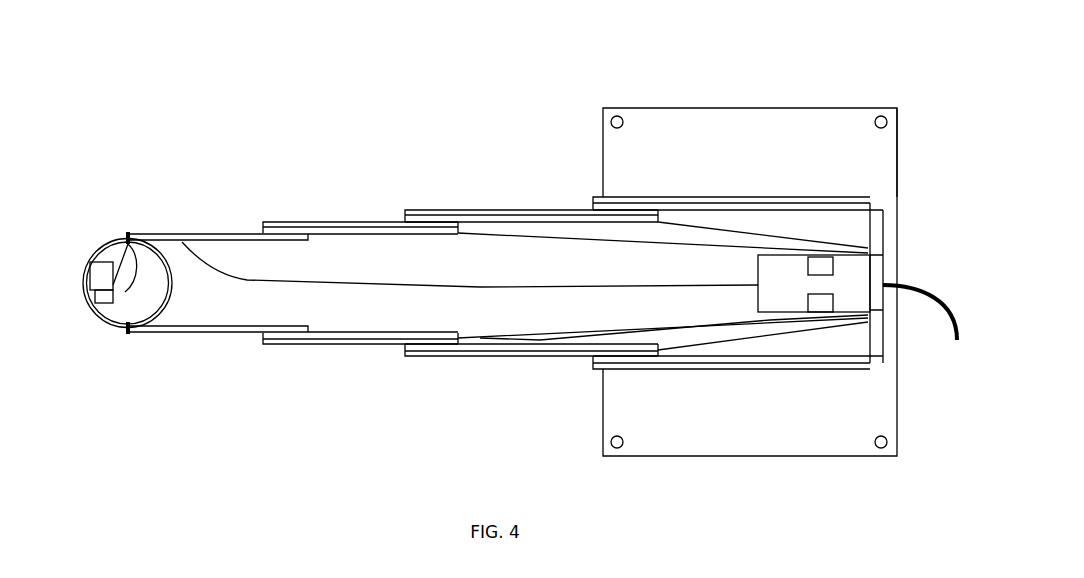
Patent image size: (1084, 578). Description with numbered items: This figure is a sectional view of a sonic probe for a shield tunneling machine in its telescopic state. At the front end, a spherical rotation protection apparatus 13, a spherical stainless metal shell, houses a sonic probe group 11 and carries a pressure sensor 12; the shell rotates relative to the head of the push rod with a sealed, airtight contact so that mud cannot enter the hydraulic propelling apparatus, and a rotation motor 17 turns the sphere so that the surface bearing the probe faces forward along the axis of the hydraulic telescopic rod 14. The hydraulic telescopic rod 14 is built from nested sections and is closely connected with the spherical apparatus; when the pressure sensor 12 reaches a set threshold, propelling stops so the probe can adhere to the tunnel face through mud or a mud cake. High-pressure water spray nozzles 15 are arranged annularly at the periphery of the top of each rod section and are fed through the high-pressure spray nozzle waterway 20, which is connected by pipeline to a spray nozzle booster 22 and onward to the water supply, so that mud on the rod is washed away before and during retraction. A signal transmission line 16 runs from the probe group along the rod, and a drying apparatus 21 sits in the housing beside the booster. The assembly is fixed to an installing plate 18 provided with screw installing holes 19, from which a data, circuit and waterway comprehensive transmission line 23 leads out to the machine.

The sonic probe group 11 is at (98, 275).
The pressure sensor 12 is at (92, 308).
The spherical rotation protection apparatus 13 is at (128, 324).
The hydraulic telescopic rod 14 is at (210, 233).
The high-pressure water spray nozzle 15 is at (413, 208).
The signal transmission line 16 is at (247, 280).
The rotation motor 17 is at (128, 243).
The installing plate 18 is at (680, 137).
The screw installing hole 19 is at (881, 118).
The high-pressure spray nozzle waterway 20 is at (540, 340).
The drying apparatus 21 is at (818, 267).
The spray nozzle booster 22 is at (872, 268).
The data, circuit and waterway comprehensive transmission line 23 is at (913, 286).